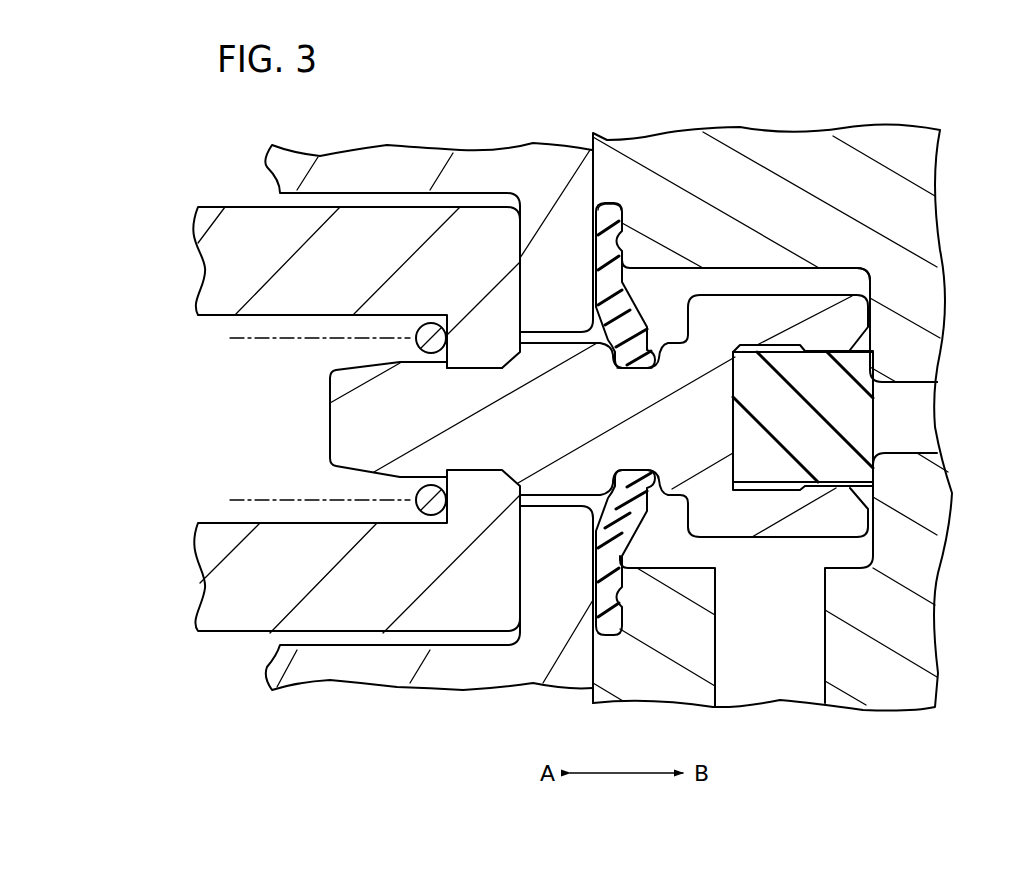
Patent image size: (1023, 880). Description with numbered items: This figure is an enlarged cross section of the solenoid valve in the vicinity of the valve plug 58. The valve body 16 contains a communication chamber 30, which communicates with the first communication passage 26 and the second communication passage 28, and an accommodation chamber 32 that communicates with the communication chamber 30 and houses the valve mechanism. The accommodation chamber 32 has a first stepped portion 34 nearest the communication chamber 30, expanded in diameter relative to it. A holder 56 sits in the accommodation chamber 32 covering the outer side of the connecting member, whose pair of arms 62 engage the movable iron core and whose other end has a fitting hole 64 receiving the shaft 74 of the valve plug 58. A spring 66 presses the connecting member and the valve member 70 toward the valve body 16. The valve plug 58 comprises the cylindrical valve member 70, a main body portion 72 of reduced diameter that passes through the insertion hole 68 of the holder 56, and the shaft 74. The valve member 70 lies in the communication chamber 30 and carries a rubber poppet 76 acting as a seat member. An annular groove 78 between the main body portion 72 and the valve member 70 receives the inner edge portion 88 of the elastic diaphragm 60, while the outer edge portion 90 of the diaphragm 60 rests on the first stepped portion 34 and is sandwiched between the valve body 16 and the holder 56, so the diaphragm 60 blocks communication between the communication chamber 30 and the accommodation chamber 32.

The valve body 16 is at (926, 122).
The first communication passage 26 is at (928, 440).
The second communication passage 28 is at (793, 692).
The communication chamber 30 is at (853, 555).
The accommodation chamber 32 is at (370, 640).
The first stepped portion 34 is at (593, 637).
The holder 56 is at (412, 158).
The valve plug 58 is at (862, 292).
The diaphragm 60 is at (628, 283).
The arms 62 is at (215, 280).
The fitting hole 64 is at (480, 368).
The spring 66 is at (428, 330).
The insertion hole 68 is at (550, 350).
The valve member 70 is at (757, 313).
The main body portion 72 is at (560, 500).
The shaft 74 is at (347, 433).
The poppet 76 is at (850, 405).
The annular groove 78 is at (632, 472).
The inner edge portion 88 is at (632, 368).
The outer edge portion 90 is at (605, 210).